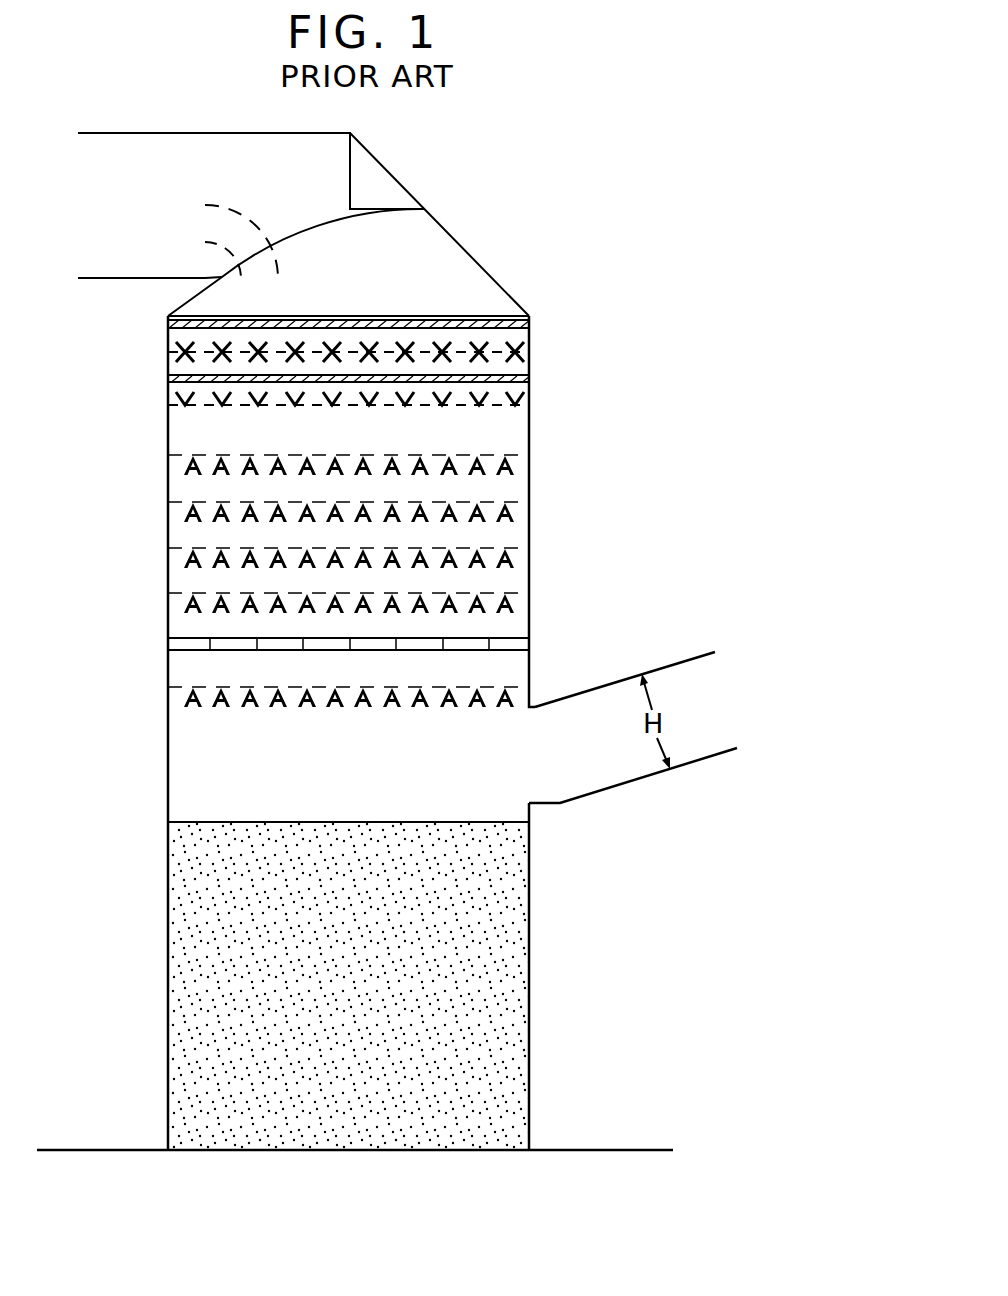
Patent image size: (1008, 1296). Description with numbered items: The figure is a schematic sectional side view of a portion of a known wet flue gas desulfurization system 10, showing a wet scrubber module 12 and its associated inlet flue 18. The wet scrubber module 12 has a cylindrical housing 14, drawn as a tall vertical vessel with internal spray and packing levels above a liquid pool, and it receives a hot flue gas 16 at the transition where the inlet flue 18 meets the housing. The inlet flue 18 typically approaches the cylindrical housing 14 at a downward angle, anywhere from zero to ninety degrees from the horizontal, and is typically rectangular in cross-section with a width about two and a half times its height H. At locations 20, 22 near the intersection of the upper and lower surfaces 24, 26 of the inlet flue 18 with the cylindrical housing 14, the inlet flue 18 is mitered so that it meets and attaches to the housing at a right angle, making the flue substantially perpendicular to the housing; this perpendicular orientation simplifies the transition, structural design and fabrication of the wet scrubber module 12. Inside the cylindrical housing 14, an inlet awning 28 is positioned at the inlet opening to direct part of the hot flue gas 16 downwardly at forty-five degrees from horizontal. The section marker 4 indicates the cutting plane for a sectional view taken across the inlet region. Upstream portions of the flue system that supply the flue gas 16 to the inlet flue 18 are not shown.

The wet flue gas desulfurization system 10 is at (583, 289).
The wet scrubber module 12 is at (180, 426).
The cylindrical housing 14 is at (530, 432).
The flue gas 16 is at (680, 717).
The inlet flue 18 is at (702, 742).
The location 20 is at (545, 692).
The location 22 is at (540, 817).
The upper surface 24 is at (613, 683).
The lower surface 26 is at (580, 803).
The inlet awning 28 is at (533, 704).
The section line 4- 4 is at (423, 622).